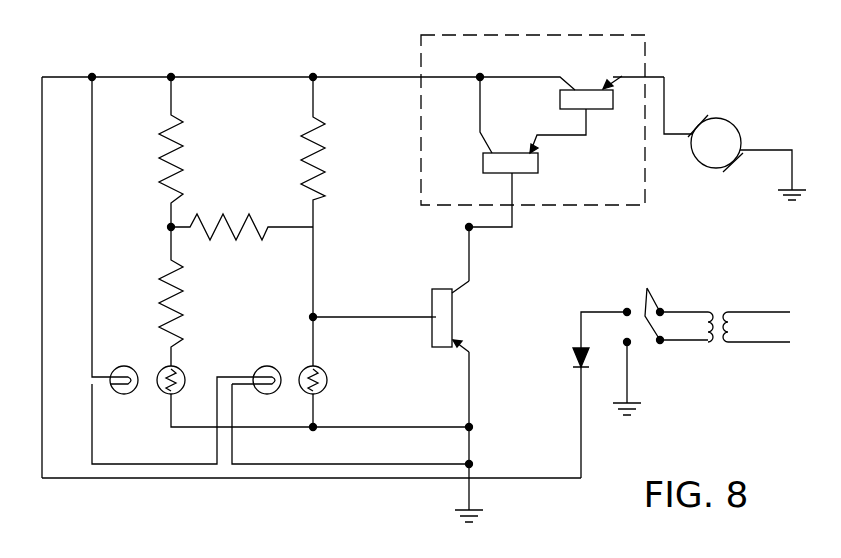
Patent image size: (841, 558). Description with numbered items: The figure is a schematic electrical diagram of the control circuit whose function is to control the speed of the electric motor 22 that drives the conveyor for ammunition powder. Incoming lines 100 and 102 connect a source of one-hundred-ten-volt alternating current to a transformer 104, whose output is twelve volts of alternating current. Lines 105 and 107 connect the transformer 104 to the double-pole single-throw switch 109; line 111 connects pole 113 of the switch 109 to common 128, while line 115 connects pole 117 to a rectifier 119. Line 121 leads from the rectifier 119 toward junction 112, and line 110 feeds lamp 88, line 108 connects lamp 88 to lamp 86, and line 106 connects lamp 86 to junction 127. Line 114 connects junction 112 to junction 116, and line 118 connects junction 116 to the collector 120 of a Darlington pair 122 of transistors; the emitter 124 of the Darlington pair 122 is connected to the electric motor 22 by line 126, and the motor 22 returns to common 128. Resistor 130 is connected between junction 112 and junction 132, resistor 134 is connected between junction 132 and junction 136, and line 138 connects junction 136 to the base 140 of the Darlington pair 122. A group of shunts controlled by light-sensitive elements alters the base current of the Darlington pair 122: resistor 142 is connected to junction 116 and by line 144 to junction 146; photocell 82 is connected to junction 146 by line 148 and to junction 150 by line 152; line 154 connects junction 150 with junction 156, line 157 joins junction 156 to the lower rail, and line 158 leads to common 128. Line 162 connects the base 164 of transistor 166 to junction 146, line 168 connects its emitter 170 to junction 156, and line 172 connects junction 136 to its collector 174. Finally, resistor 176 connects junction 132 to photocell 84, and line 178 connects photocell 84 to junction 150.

The electric motor 22 is at (692, 152).
The photocell 82 is at (328, 382).
The photocell 84 is at (186, 378).
The lamp 86 is at (264, 393).
The lamp 88 is at (116, 393).
The incoming line 100 is at (764, 312).
The incoming line 102 is at (766, 342).
The transformer 104 is at (712, 305).
The line 105 is at (702, 303).
The line 106 is at (246, 464).
The line 107 is at (695, 342).
The line 108 is at (116, 464).
The double-pole single-throw switch 109 is at (647, 288).
The line 110 is at (92, 242).
The line 111 is at (634, 408).
The junction 112 is at (171, 77).
The pole 113 is at (628, 364).
The line 114 is at (240, 77).
The line 115 is at (590, 312).
The junction 116 is at (313, 77).
The pole 117 is at (627, 310).
The line 118 is at (360, 77).
The rectifier 119 is at (570, 362).
The collector 120 is at (493, 58).
The line 121 is at (236, 478).
The Darlington pair 122 is at (545, 35).
The emitter 124 is at (616, 78).
The line 126 is at (665, 104).
The junction 127 is at (472, 464).
The common 128 is at (460, 508).
The resistor 130 is at (178, 166).
The junction 132 is at (171, 228).
The resistor 134 is at (203, 218).
The junction 136 is at (468, 228).
The line 138 is at (512, 230).
The base 140 is at (515, 190).
The resistor 142 is at (322, 186).
The line 144 is at (314, 283).
The junction 146 is at (312, 317).
The line 148 is at (313, 355).
The junction 150 is at (318, 430).
The line 152 is at (314, 410).
The line 154 is at (394, 428).
The junction 156 is at (468, 427).
The line 157 is at (470, 440).
The line 158 is at (472, 490).
The line 162 is at (400, 318).
The base 164 is at (432, 314).
The transistor 166 is at (462, 290).
The line 168 is at (470, 345).
The emitter 170 is at (458, 350).
The line 172 is at (470, 260).
The collector 174 is at (452, 280).
The resistor 176 is at (184, 322).
The line 178 is at (173, 424).